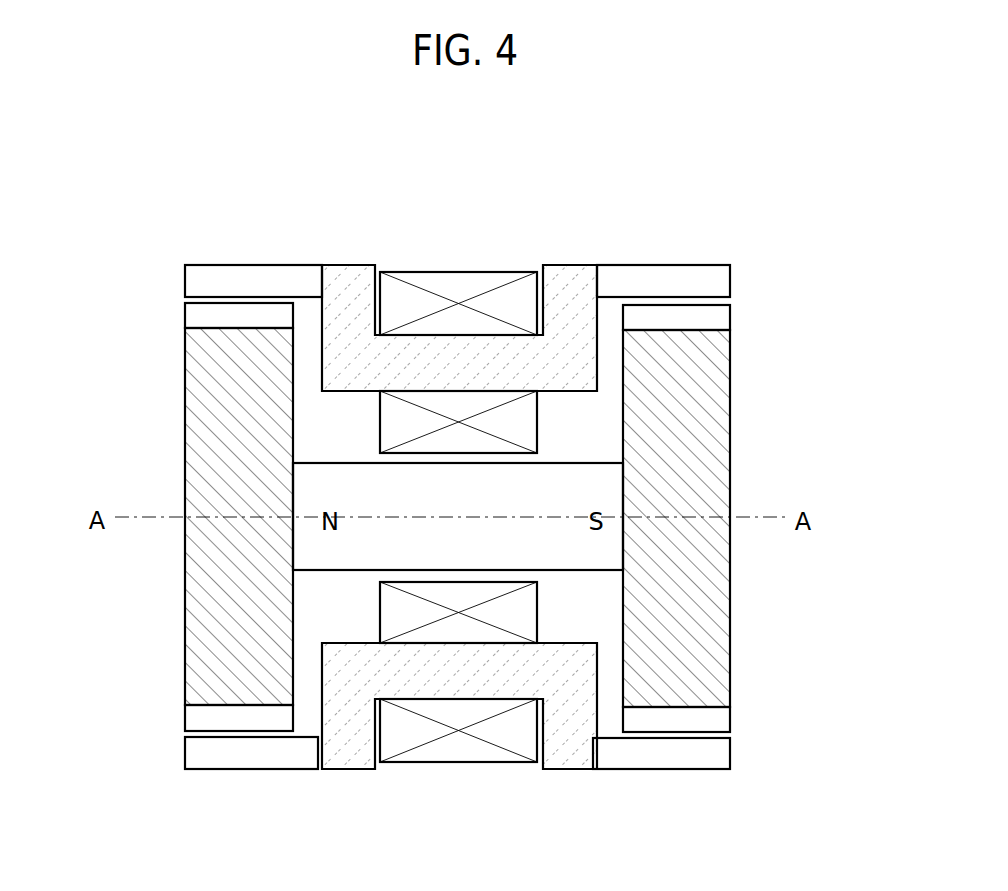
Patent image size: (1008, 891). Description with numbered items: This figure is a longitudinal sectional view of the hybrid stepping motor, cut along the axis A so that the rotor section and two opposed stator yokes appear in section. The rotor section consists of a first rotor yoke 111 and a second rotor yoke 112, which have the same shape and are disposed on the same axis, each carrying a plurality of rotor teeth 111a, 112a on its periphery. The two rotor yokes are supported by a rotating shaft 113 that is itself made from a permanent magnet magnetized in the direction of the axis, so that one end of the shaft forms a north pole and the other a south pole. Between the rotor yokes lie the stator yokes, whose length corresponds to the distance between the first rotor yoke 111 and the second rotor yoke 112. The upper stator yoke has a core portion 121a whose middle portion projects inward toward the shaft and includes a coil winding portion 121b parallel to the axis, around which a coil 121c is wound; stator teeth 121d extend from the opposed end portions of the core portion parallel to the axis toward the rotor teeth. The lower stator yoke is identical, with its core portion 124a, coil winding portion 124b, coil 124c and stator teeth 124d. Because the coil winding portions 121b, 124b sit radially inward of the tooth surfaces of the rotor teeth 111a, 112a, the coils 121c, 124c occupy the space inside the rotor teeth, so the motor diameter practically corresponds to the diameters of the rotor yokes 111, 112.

The first rotor yoke 111 is at (187, 458).
The rotor teeth 111a is at (198, 316).
The second rotor yoke 112 is at (728, 450).
The rotor teeth 112a is at (727, 313).
The rotating shaft 113 is at (583, 572).
The core portion 121a is at (342, 273).
The coil winding portion 121b is at (415, 347).
The coil 121c is at (508, 417).
The stator teeth 121d is at (238, 266).
The core portion 124a is at (338, 768).
The coil winding portion 124b is at (410, 687).
The coil 124c is at (507, 618).
The stator teeth 124d is at (240, 758).